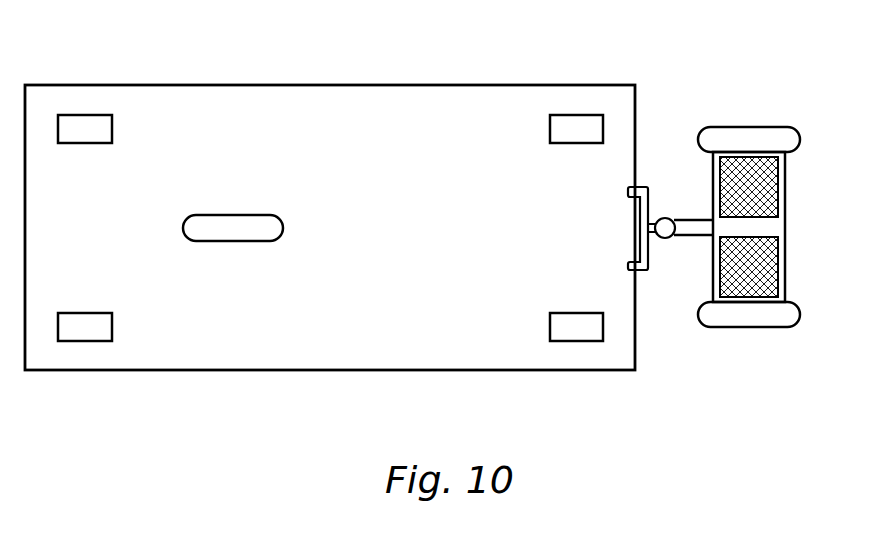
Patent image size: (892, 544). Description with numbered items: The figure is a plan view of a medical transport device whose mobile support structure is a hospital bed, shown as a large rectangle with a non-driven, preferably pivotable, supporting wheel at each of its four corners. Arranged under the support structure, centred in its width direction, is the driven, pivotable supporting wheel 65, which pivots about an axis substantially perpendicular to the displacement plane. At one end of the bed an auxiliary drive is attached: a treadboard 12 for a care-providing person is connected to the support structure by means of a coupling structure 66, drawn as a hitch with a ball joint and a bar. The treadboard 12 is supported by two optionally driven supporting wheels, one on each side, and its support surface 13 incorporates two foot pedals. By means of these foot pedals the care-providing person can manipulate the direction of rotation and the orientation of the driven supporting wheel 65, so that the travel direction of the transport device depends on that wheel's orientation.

The driven supporting wheel 65 is at (233, 228).
The coupling structure 66 is at (690, 228).
The treadboard 12 is at (772, 227).
The support surface 13 is at (770, 230).